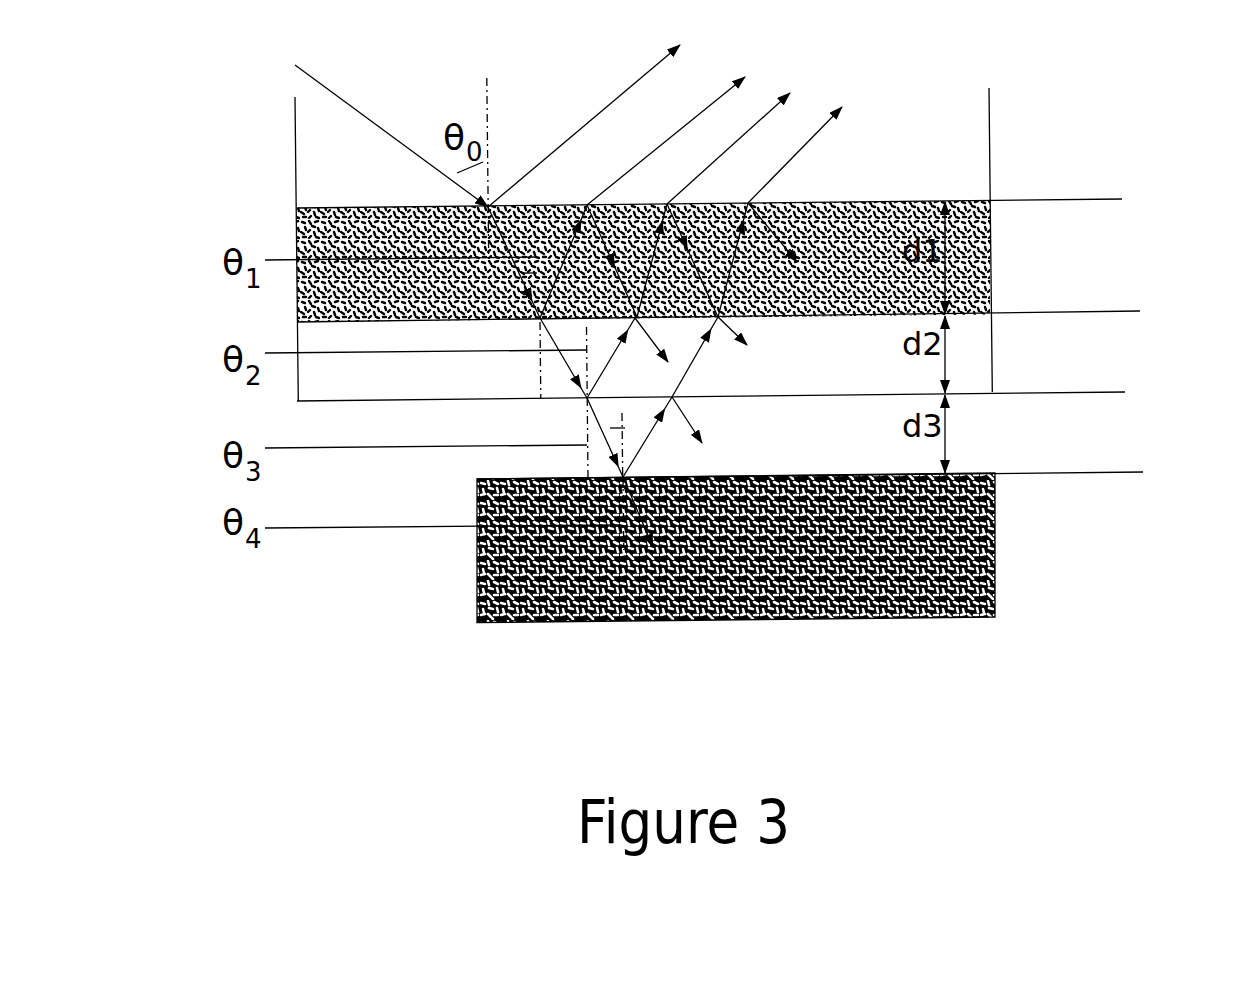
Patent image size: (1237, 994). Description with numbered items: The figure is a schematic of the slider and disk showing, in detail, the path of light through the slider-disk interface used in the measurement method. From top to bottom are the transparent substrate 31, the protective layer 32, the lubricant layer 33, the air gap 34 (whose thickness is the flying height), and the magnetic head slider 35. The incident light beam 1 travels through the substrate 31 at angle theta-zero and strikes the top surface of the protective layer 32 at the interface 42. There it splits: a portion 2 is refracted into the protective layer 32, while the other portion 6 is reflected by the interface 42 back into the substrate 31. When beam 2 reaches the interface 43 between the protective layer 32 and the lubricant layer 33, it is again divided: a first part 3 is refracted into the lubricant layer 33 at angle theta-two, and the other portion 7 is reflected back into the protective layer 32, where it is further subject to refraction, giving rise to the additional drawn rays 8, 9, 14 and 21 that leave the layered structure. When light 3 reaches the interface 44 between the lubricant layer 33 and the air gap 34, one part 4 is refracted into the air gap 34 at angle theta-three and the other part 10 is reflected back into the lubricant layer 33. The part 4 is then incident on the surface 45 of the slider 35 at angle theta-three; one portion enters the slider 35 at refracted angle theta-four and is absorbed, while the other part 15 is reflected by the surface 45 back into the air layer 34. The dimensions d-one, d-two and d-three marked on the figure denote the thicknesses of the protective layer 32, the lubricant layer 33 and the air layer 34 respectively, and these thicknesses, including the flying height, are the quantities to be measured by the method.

The light beam 1 is at (459, 168).
The refracted portion of beam 2 is at (519, 342).
The first refracted part 3 is at (566, 402).
The refracted part of light 4 is at (600, 481).
The reflected portion of beam 6 is at (584, 126).
The reflected portion 7 is at (563, 261).
The ray reflected downward within first layer 8 is at (612, 261).
The second emerging ray 9 is at (666, 141).
The reflected part 10 is at (627, 358).
The third emerging ray 14 is at (728, 148).
The reflected part of light 15 is at (662, 437).
The fourth emerging ray 21 is at (795, 155).
The substrate 31 is at (975, 152).
The protective layer 32 is at (975, 250).
The lubricant layer 33 is at (977, 343).
The air gap 34 is at (962, 425).
The slider 35 is at (998, 550).
The interface 42 is at (742, 200).
The interface 43 is at (742, 308).
The interface 44 is at (742, 390).
The surface 45 is at (833, 470).